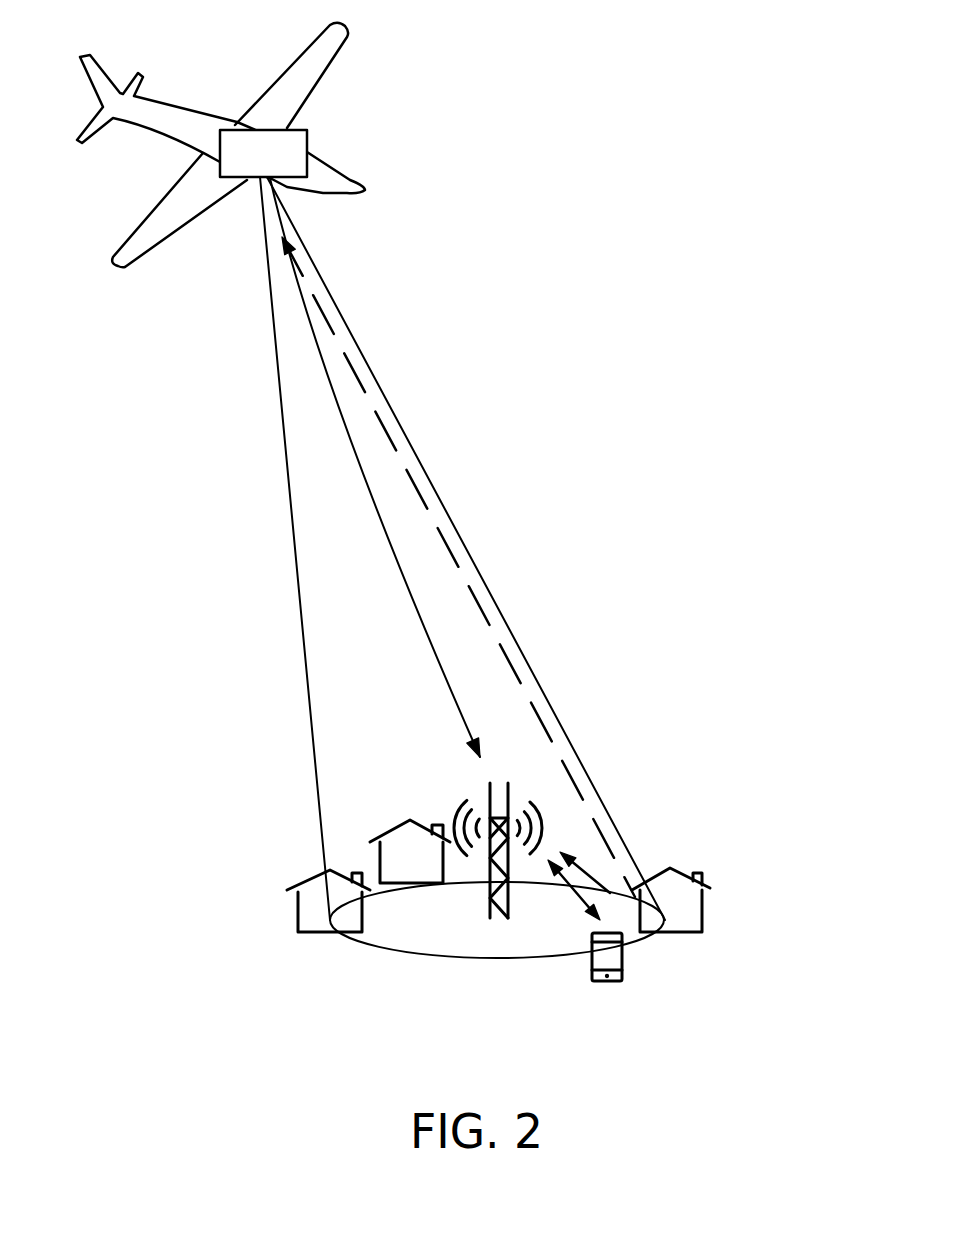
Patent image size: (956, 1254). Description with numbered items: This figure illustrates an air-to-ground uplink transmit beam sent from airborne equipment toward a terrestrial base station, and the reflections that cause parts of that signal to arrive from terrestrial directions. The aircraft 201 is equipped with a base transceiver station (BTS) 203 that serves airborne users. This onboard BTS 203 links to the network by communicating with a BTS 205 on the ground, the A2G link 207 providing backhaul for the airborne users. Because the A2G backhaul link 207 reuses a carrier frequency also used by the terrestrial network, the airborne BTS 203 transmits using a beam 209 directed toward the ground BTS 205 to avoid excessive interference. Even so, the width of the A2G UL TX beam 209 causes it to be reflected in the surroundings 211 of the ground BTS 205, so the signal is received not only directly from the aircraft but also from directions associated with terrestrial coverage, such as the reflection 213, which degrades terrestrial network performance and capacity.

The aircraft 201 is at (157, 98).
The base transceiver station (BTS) 203 is at (298, 155).
The BTS on the ground 205 is at (487, 897).
The A2G link 207 is at (417, 600).
The A2G UL TX beam 209 is at (383, 395).
The surroundings of the BTS on the ground 211 is at (522, 927).
The reflection 213 is at (597, 868).